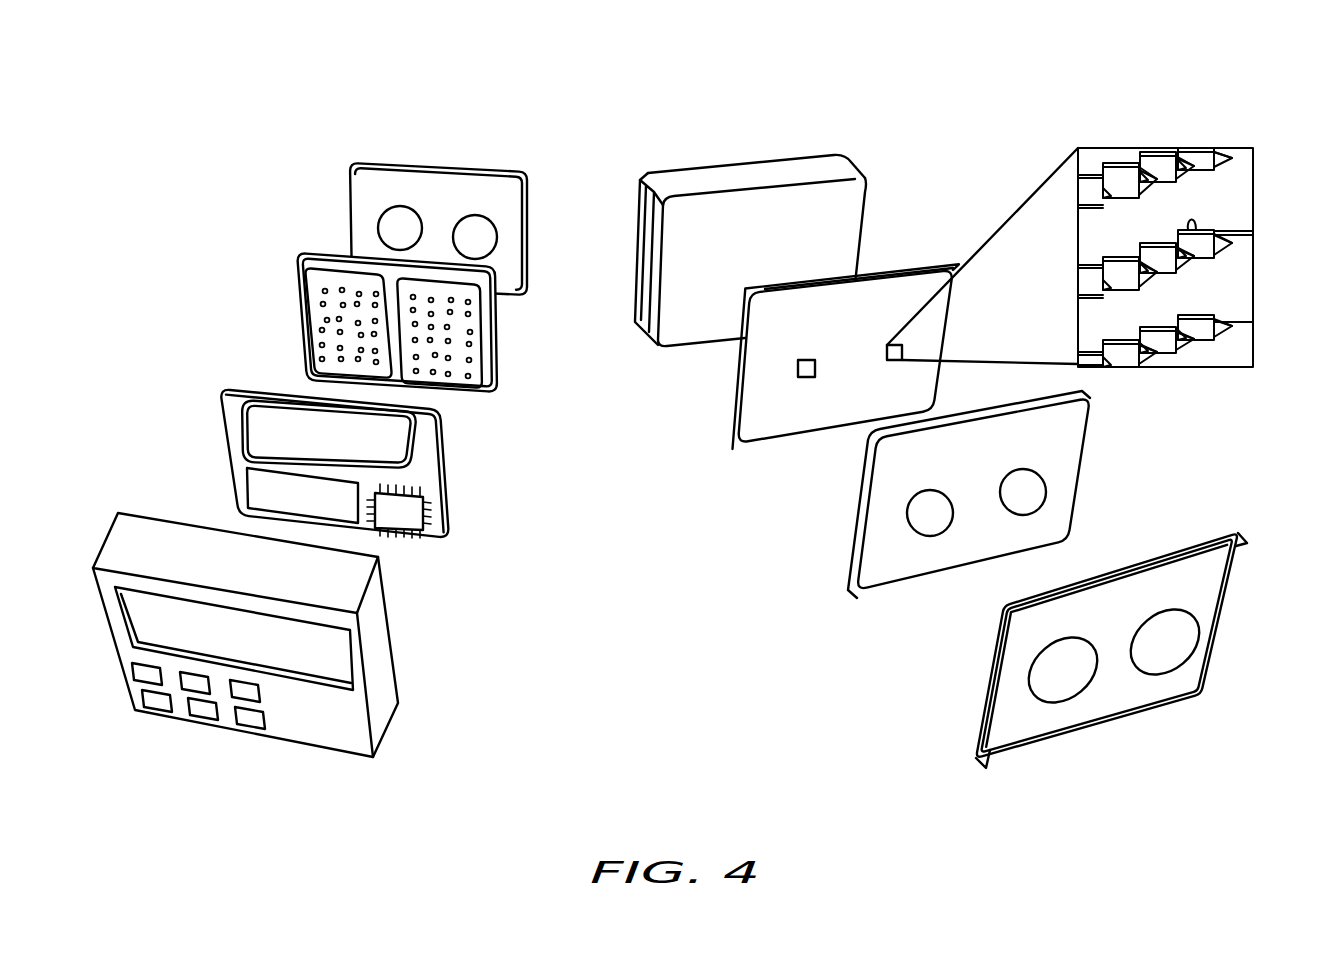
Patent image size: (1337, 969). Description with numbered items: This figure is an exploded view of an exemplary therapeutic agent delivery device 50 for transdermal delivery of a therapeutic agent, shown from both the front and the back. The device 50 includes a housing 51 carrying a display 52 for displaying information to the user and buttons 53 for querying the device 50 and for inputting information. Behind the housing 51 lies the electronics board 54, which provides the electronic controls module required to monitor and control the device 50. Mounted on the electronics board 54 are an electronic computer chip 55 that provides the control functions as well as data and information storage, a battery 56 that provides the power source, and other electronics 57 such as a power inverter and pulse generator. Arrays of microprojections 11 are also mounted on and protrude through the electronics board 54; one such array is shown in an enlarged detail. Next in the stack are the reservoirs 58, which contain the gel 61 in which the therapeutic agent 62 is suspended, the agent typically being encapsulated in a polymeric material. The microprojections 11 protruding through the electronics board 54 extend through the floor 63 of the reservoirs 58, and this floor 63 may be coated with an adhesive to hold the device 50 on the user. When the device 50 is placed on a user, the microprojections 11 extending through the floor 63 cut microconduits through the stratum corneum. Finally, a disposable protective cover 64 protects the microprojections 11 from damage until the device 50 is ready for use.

The therapeutic agent delivery device 50 is at (757, 105).
The housing 51 is at (143, 530).
The display 52 is at (130, 603).
The buttons 53 is at (207, 703).
The electronics board 54 is at (230, 393).
The electronic computer chip 55 is at (410, 522).
The battery 56 is at (253, 495).
The other electronics 57 is at (277, 408).
The reservoirs 58 is at (640, 374).
The gel 61 is at (335, 278).
The therapeutic agent 62 is at (337, 343).
The floor of the reservoirs 63 is at (1073, 437).
The disposable protective cover 64 is at (348, 182).
The microprojections 11 is at (1202, 233).